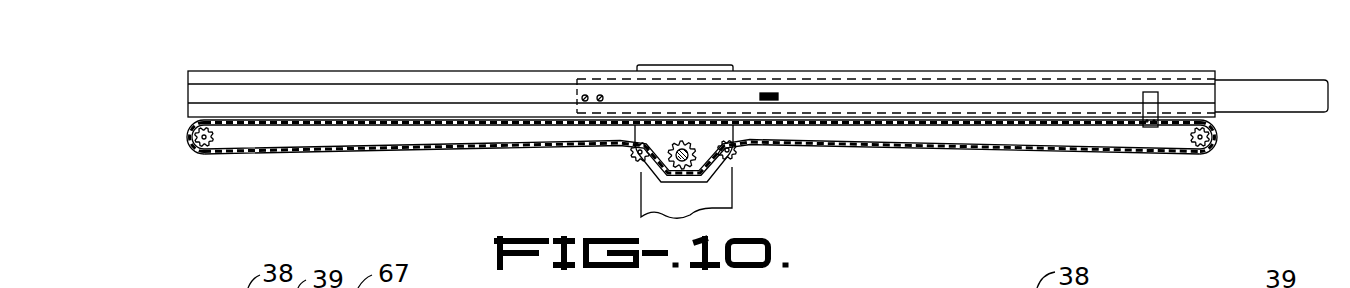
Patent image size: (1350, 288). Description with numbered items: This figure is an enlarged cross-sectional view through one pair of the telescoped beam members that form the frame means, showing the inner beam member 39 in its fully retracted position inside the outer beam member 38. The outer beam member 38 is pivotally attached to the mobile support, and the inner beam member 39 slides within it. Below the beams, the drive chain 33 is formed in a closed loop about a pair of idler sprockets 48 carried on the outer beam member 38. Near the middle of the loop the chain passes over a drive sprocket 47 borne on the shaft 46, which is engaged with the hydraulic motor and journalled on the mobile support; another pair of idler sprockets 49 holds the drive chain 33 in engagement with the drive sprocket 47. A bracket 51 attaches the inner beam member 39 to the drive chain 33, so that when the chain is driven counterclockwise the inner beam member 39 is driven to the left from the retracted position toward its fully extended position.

The drive chain 33 is at (990, 148).
The outer beam member 38 is at (890, 71).
The inner beam member 39 is at (992, 76).
The shaft 46 is at (692, 160).
The drive sprocket 47 is at (660, 172).
The idler sprockets 48 is at (205, 146).
The idler sprockets 49 is at (637, 158).
The bracket 51 is at (1155, 97).